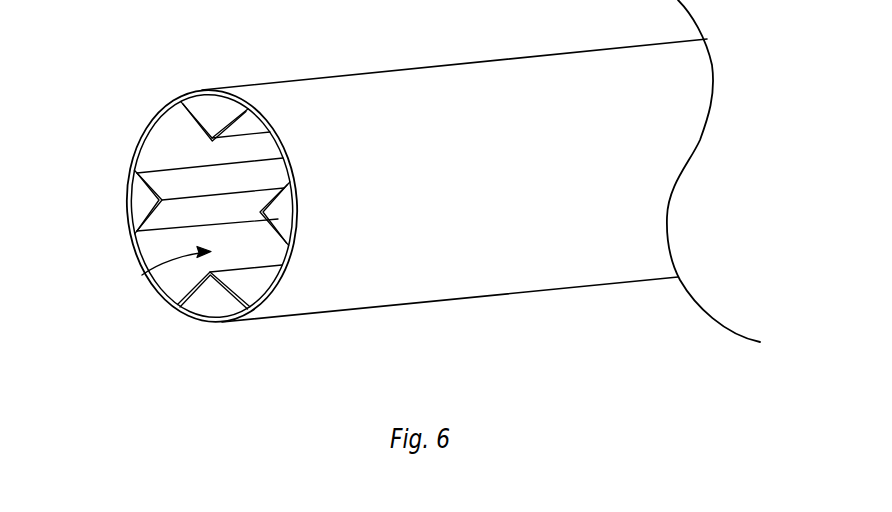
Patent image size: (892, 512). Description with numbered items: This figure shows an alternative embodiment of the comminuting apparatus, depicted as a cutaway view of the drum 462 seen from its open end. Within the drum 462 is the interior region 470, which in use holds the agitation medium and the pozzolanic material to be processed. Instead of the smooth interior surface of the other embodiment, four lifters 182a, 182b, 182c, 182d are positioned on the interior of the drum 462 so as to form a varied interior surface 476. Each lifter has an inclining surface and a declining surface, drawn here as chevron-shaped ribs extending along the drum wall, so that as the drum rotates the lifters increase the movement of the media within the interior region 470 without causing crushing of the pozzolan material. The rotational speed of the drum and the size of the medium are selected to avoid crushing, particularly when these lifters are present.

The drum 462 is at (396, 70).
The interior surface 476 is at (162, 143).
The lifter 182a is at (282, 217).
The lifter 182b is at (217, 307).
The lifter 182c is at (141, 197).
The lifter 182d is at (210, 110).
The interior region 470 is at (142, 275).